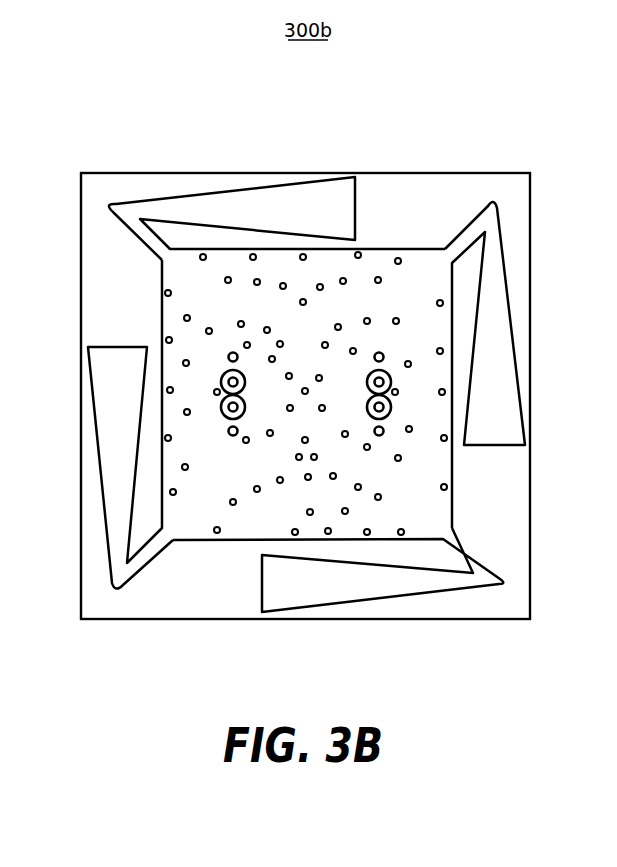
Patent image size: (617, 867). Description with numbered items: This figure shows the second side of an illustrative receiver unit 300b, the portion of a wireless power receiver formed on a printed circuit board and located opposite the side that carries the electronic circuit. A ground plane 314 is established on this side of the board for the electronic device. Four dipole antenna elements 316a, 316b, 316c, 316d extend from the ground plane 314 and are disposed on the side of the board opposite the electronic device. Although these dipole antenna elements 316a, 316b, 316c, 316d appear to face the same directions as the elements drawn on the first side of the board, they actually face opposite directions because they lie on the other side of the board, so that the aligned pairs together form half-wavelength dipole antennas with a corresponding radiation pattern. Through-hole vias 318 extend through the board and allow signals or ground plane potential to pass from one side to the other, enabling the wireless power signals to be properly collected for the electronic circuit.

The receiver unit 300b is at (305, 396).
The ground plane 314 is at (212, 310).
The dipole antenna element 316a is at (215, 172).
The dipole antenna element 316b is at (535, 269).
The dipole antenna element 316c is at (319, 621).
The dipole antenna element 316d is at (98, 473).
The through-hole vias 318 is at (359, 436).